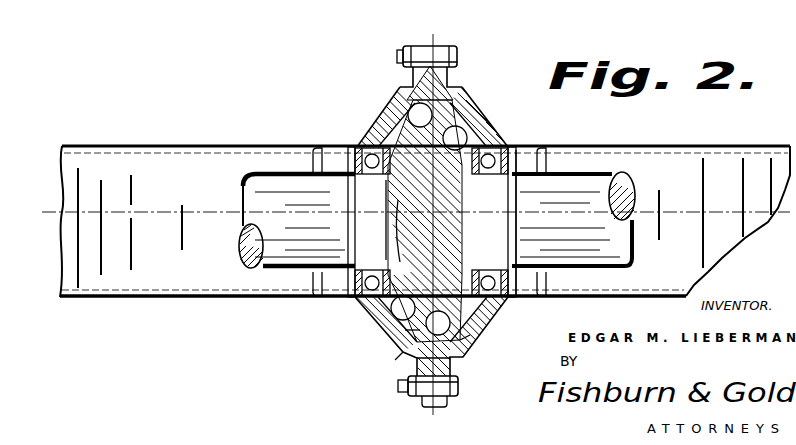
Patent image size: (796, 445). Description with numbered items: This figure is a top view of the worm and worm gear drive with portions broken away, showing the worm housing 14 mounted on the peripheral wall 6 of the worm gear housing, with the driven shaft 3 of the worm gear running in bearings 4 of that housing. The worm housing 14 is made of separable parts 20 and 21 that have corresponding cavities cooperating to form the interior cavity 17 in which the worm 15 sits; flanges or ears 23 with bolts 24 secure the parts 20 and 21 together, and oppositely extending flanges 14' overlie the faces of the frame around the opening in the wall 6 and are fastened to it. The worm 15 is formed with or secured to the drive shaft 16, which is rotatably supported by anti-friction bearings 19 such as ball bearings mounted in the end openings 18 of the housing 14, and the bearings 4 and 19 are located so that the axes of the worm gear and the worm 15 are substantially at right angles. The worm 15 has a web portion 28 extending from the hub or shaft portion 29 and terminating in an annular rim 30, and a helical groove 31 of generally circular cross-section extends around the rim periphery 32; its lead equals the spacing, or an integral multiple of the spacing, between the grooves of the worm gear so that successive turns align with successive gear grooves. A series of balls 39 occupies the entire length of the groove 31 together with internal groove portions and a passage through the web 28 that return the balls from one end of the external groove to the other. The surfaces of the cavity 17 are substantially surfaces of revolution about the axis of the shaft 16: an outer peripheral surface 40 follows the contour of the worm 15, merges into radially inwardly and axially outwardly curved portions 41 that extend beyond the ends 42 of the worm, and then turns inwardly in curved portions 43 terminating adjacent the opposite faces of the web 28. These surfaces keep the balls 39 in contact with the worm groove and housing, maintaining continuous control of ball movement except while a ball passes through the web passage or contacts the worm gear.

The driven shaft 3 is at (45, 228).
The bearings 4 is at (447, 34).
The peripheral portion or wall 6 is at (700, 150).
The worm housing 14 is at (429, 324).
The flanges 14' is at (446, 146).
The worm 15 is at (398, 128).
The drive shaft 16 is at (628, 255).
The cavity 17 is at (461, 100).
The end openings 18 is at (500, 141).
The anti-friction bearings 19 is at (370, 150).
The separable part 20 is at (400, 356).
The separable part 21 is at (498, 118).
The flanges or ears 23 is at (428, 400).
The bolts 24 is at (452, 378).
The web portion 28 is at (486, 318).
The hub or shaft portion 29 is at (472, 218).
The annular rim 30 is at (401, 346).
The helical groove 31 is at (408, 108).
The rim periphery 32 is at (452, 98).
The anti-friction elements or balls 39 is at (474, 340).
The outer peripheral surface 40 is at (443, 112).
The curved portions 41 is at (386, 115).
The ends of the worm 42 is at (472, 128).
The curved portions 43 is at (390, 146).